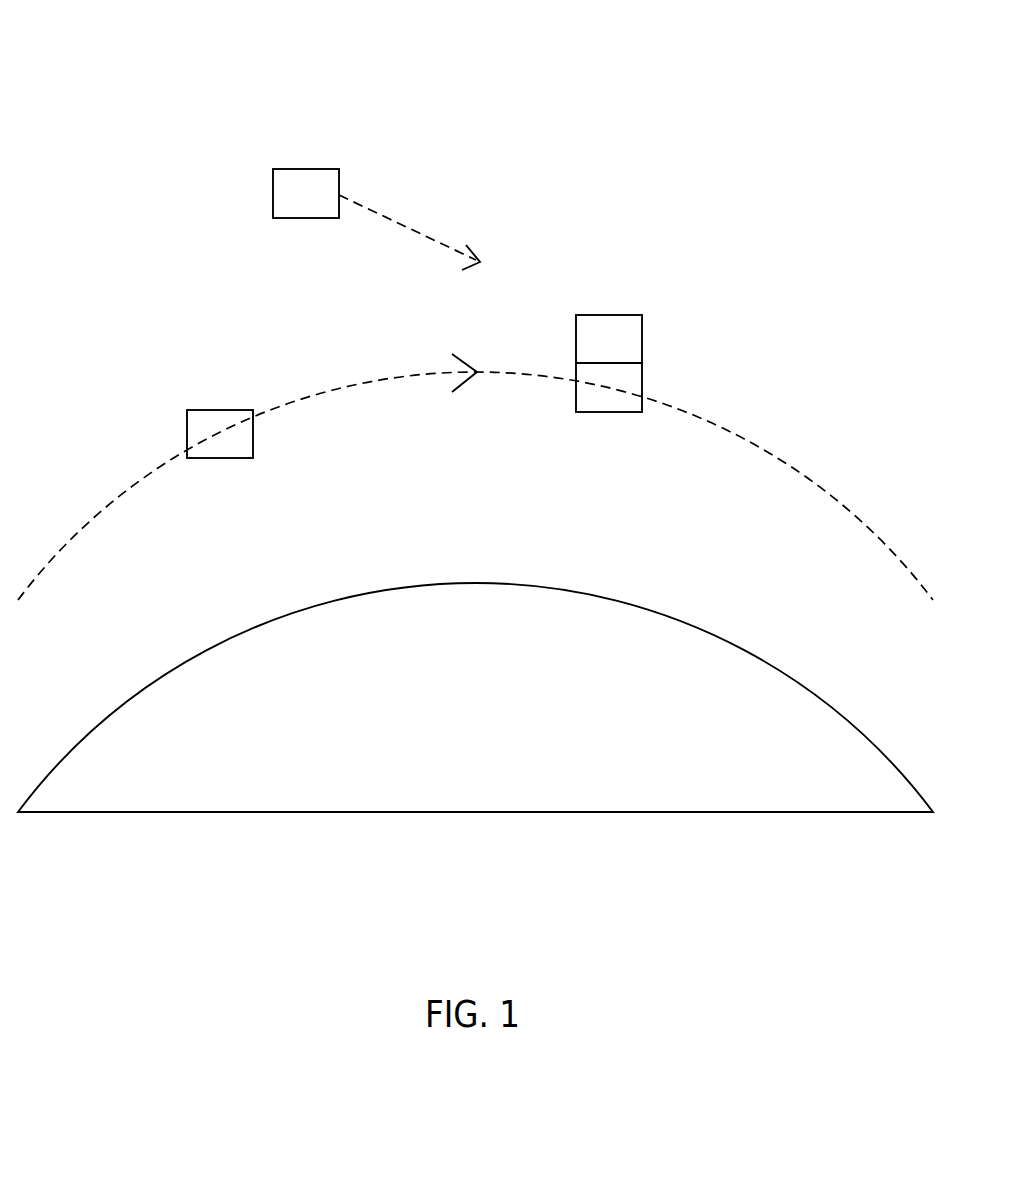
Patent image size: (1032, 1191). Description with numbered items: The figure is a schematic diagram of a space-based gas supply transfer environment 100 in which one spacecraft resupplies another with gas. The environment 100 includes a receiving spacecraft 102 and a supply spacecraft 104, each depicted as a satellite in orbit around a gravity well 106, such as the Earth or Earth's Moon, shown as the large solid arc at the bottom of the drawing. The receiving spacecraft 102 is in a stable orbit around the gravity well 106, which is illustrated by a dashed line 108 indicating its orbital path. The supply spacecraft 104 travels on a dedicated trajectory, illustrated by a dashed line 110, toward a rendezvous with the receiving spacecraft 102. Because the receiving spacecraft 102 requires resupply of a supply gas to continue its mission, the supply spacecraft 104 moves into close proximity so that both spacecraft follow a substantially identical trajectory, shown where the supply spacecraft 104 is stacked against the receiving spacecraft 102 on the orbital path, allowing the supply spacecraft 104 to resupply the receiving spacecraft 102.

The space-based gas supply transfer environment 100 is at (282, 60).
The receiving spacecraft 102 is at (205, 410).
The supply spacecraft 104 is at (292, 169).
The gravity well 106 is at (458, 583).
The dashed line indicating orbital path 108 is at (737, 436).
The dashed line indicating dedicated trajectory 110 is at (408, 226).